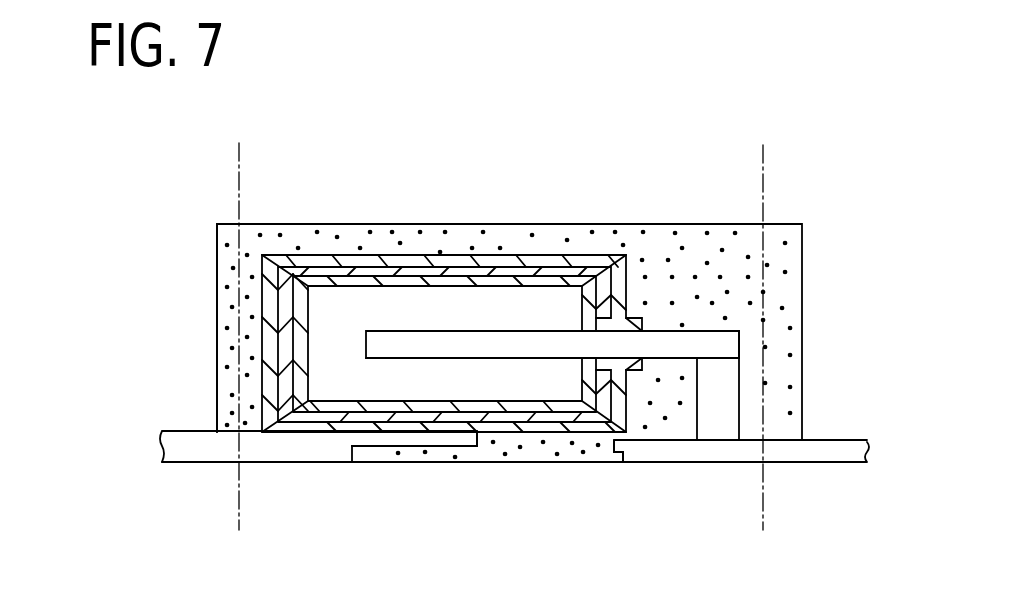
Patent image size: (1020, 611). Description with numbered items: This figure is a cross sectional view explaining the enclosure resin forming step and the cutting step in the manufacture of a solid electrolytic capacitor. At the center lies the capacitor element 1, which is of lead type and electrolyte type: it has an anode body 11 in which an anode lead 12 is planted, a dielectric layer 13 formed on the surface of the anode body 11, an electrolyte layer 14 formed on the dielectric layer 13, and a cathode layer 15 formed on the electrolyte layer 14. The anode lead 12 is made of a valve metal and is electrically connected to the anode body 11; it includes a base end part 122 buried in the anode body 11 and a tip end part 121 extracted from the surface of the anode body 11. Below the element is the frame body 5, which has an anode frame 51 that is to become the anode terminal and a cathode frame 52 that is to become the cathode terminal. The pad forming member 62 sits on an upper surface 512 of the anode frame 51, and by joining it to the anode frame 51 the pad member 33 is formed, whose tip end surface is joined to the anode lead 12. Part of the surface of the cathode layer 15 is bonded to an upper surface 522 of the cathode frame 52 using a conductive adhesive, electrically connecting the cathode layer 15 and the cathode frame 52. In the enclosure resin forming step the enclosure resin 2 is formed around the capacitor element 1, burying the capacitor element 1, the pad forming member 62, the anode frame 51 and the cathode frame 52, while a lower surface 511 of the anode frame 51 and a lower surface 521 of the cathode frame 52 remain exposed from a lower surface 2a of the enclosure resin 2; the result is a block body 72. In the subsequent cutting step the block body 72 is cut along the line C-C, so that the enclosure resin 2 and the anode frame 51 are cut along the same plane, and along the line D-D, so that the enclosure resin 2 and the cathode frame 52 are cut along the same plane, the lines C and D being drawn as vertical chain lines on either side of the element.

The capacitor element 1 is at (500, 313).
The anode body 11 is at (380, 308).
The anode lead 12 is at (552, 341).
The tip end part 121 is at (702, 330).
The base end part 122 is at (447, 358).
The dielectric layer 13 is at (457, 282).
The electrolyte layer 14 is at (500, 272).
The cathode layer 15 is at (533, 260).
The enclosure resin 2 is at (471, 330).
The lower surface of the enclosure resin 2a is at (490, 455).
The block body 72 is at (217, 224).
The pad forming member 62 is at (801, 399).
The pad member 33 is at (722, 402).
The frame body 5 is at (514, 497).
The anode frame 51 is at (739, 492).
The lower surface of the anode frame 511 is at (642, 463).
The upper surface of the anode frame 512 is at (677, 433).
The cathode frame 52 is at (391, 490).
The lower surface of the cathode frame 521 is at (278, 455).
The upper surface of the cathode frame 522 is at (368, 450).
The line C- C is at (762, 337).
The line D- D is at (236, 336).